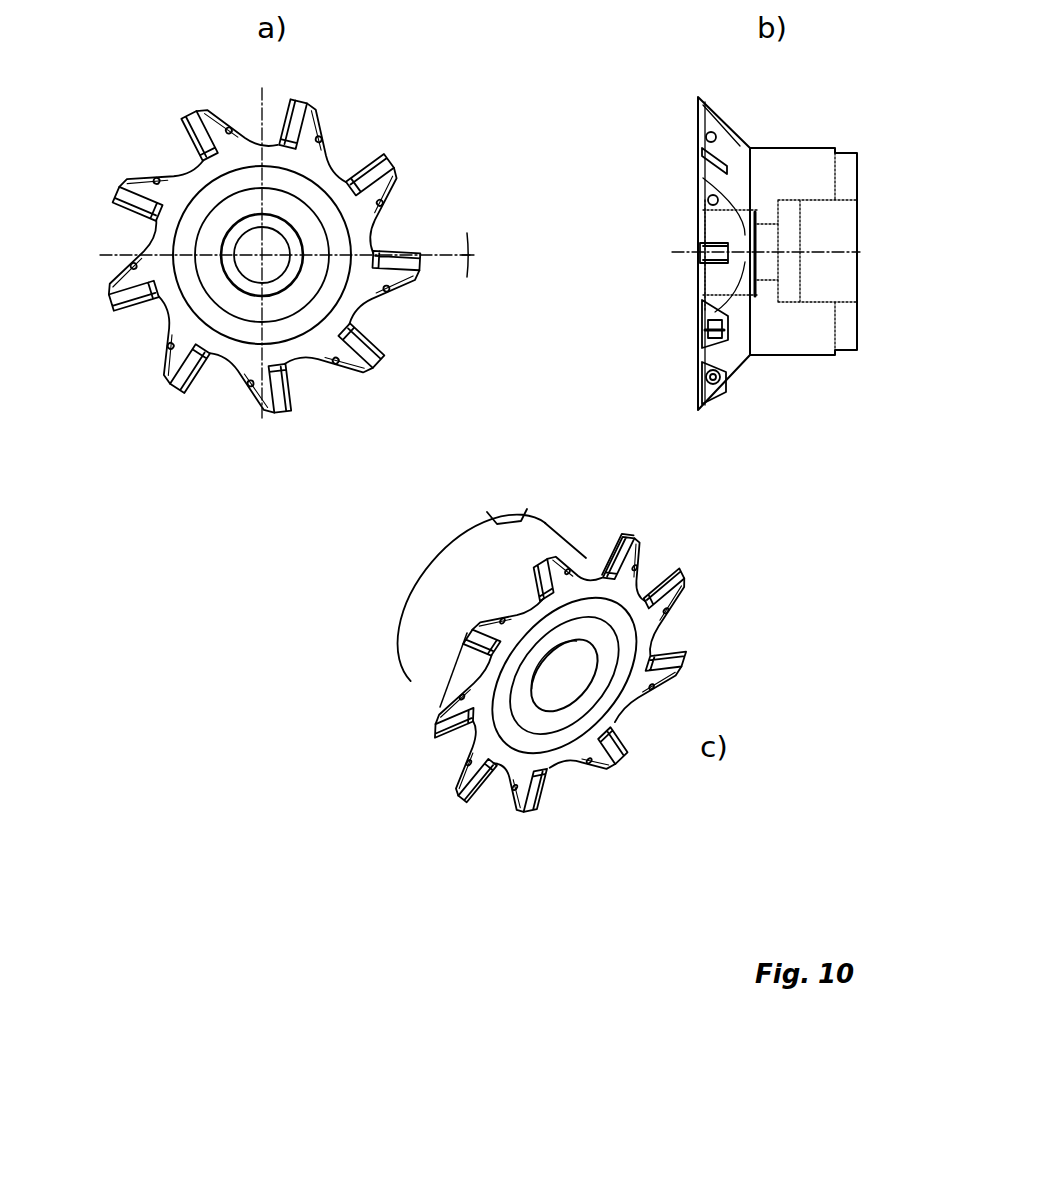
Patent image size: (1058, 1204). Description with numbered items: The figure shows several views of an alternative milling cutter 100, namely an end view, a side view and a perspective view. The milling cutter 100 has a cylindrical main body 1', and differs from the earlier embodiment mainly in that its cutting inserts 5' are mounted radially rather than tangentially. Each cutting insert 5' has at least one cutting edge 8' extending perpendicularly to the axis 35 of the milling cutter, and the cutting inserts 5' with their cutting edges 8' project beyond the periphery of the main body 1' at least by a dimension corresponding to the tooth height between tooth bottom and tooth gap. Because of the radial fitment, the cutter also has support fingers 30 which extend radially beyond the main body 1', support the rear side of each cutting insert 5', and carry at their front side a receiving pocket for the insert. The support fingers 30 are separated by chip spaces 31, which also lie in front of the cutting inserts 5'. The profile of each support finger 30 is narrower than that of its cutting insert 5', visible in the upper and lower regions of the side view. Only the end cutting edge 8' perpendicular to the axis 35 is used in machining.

The milling cutter 100 is at (373, 650).
The main body 1' is at (621, 427).
The cutting insert 5' is at (486, 451).
The cutting edge 8' is at (690, 408).
The support finger 30 is at (350, 360).
The chip space 31 is at (380, 319).
The axis 35 is at (266, 254).